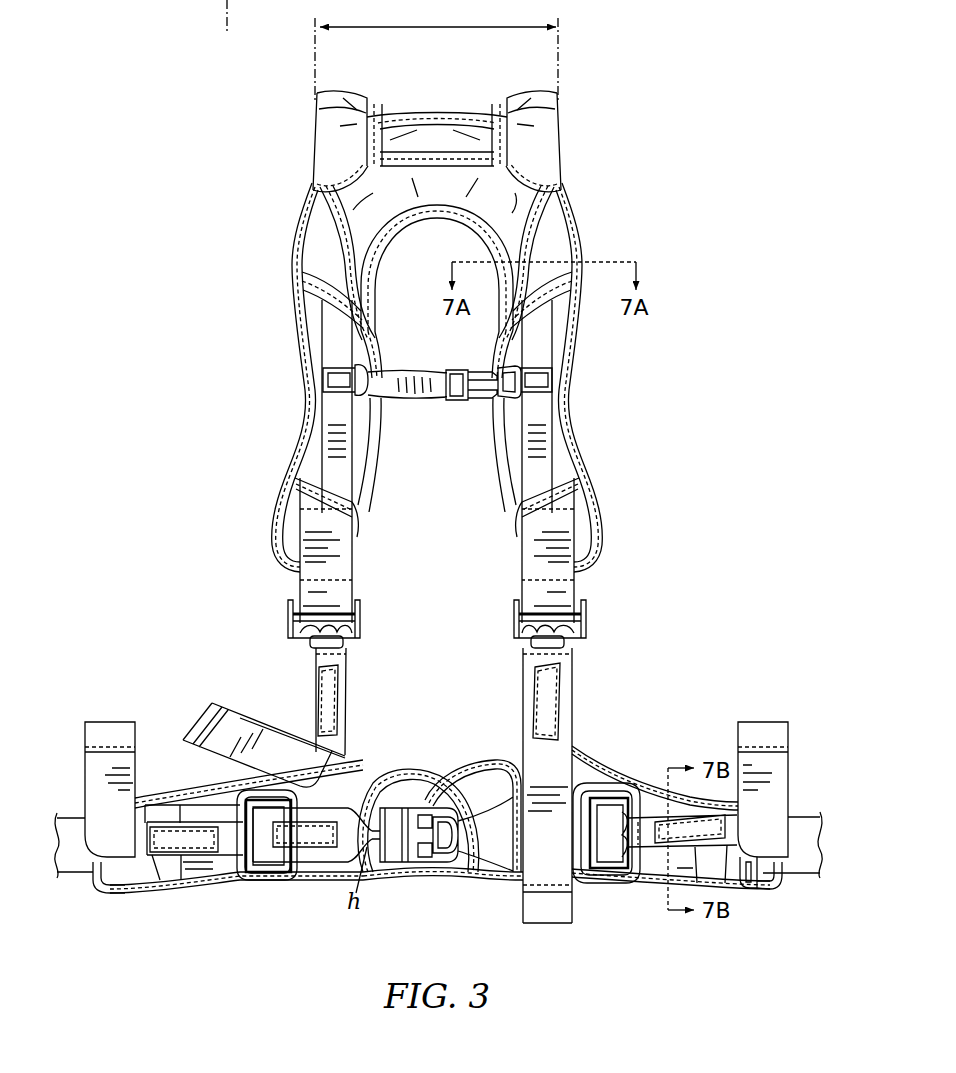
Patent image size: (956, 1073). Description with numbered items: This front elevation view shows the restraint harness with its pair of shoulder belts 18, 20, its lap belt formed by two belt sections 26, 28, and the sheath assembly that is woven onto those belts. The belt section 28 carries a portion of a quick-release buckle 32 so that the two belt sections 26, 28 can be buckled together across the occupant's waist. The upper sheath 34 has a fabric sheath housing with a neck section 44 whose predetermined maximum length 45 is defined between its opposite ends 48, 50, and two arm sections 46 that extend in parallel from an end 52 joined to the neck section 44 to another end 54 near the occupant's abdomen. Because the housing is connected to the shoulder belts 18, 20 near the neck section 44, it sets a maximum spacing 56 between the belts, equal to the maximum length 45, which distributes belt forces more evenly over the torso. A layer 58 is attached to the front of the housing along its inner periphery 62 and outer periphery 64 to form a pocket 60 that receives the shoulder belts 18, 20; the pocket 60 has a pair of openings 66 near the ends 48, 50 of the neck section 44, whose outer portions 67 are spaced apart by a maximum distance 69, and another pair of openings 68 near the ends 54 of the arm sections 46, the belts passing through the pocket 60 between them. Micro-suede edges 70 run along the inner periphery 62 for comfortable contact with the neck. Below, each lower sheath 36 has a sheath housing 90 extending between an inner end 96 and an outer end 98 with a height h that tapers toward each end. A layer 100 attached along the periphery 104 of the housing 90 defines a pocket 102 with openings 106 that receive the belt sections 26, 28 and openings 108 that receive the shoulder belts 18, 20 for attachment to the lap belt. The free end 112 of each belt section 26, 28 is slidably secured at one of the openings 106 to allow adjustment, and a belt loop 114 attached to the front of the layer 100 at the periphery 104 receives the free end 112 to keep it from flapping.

The shoulder belt 18 is at (352, 108).
The shoulder belt 20 is at (540, 112).
The belt section 26 is at (77, 813).
The belt section 28 is at (800, 816).
The quick-release buckle portion 32 is at (462, 813).
The upper sheath 34 is at (300, 140).
The lower sheath 36 is at (190, 788).
The neck section 44 is at (432, 100).
The maximum length 45 is at (492, 112).
The arm section 46 is at (293, 290).
The end of neck section 48 is at (312, 92).
The end of neck section 50 is at (561, 78).
The end of arm section 52 is at (300, 168).
The end of arm section 54 is at (278, 505).
The maximum spacing 56 is at (498, 170).
The layer 58 is at (322, 230).
The pocket 60 is at (373, 145).
The inner periphery 62 is at (372, 272).
The outer periphery 64 is at (290, 262).
The opening 66 is at (390, 150).
The outer portion 67 is at (453, 28).
The opening 68 is at (505, 506).
The maximum distance 69 is at (302, 166).
The edge 70 is at (411, 214).
The sheath housing 90 is at (186, 898).
The inner end 96 is at (443, 878).
The outer end 98 is at (103, 905).
The layer 100 is at (358, 790).
The pocket 102 is at (290, 876).
The periphery 104 is at (481, 756).
The opening 106 is at (110, 878).
The opening 108 is at (353, 756).
The free end 112 is at (96, 715).
The belt loop 114 is at (167, 873).